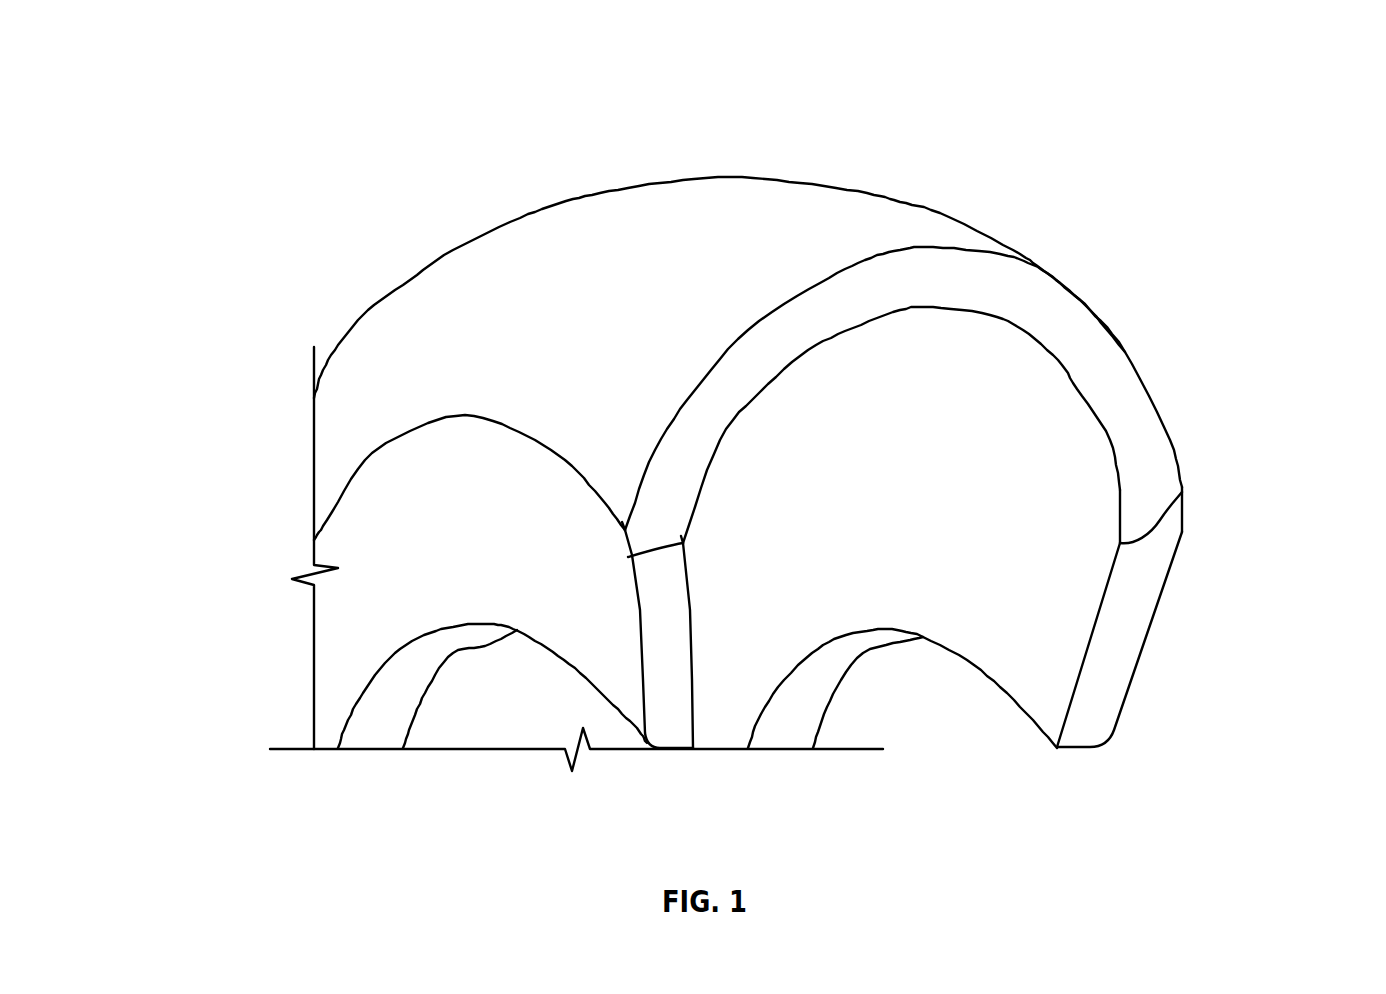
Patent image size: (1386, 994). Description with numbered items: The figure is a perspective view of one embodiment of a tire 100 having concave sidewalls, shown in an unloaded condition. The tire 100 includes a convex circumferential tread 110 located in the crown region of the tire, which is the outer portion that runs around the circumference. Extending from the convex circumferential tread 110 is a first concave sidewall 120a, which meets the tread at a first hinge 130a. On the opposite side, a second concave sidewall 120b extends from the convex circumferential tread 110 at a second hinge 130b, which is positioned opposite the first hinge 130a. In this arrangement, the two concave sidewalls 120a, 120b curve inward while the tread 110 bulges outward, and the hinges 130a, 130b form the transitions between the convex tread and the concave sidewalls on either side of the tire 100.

The tire 100 is at (268, 64).
The convex circumferential tread 110 is at (866, 220).
The first concave sidewall 120a is at (673, 652).
The second concave sidewall 120b is at (1117, 618).
The first hinge 130a is at (628, 557).
The second hinge 130b is at (1182, 492).